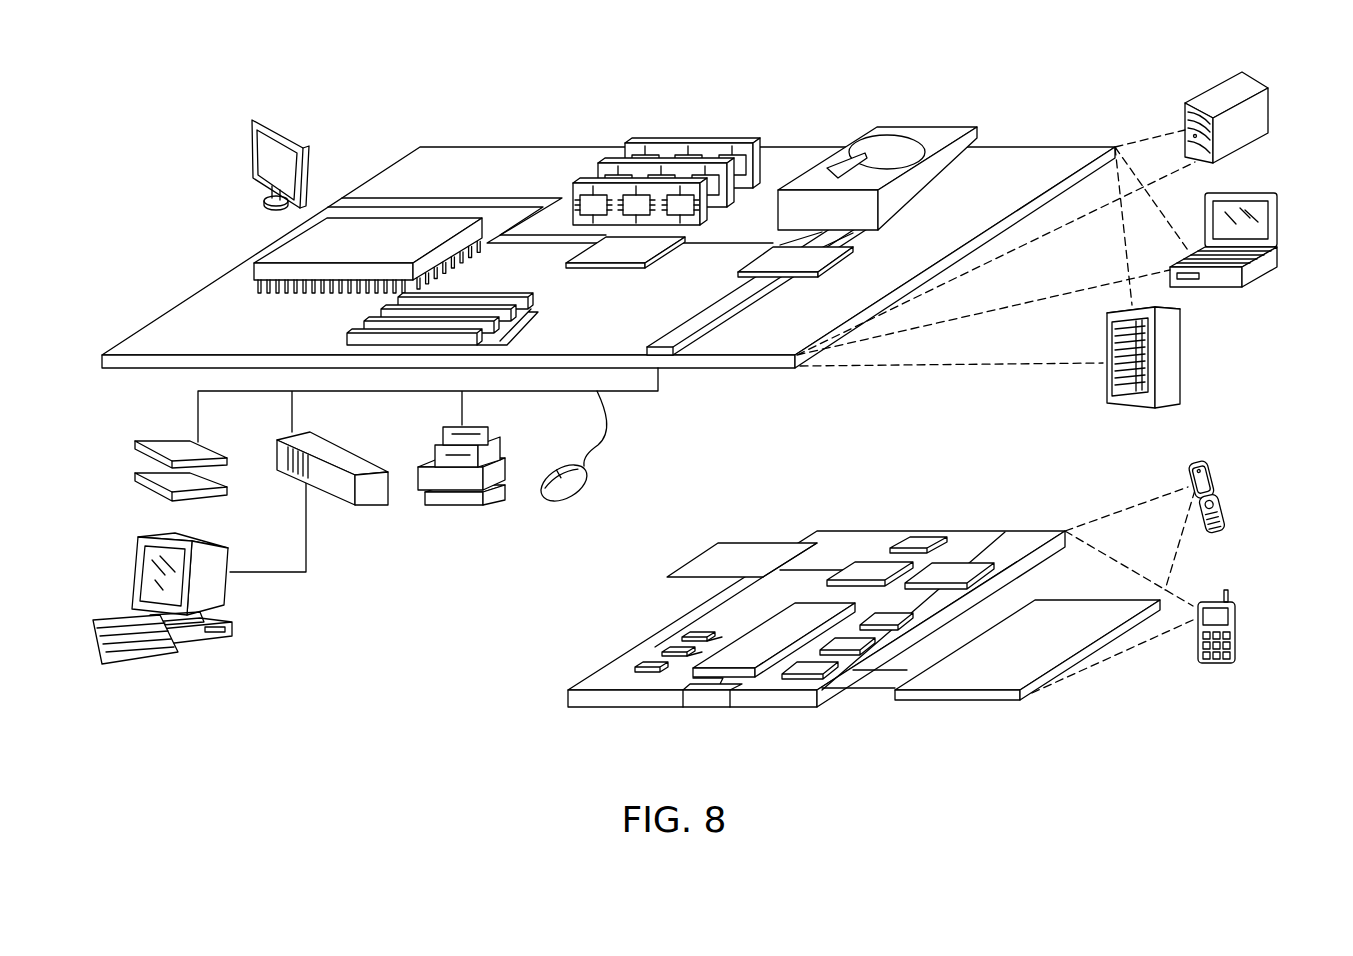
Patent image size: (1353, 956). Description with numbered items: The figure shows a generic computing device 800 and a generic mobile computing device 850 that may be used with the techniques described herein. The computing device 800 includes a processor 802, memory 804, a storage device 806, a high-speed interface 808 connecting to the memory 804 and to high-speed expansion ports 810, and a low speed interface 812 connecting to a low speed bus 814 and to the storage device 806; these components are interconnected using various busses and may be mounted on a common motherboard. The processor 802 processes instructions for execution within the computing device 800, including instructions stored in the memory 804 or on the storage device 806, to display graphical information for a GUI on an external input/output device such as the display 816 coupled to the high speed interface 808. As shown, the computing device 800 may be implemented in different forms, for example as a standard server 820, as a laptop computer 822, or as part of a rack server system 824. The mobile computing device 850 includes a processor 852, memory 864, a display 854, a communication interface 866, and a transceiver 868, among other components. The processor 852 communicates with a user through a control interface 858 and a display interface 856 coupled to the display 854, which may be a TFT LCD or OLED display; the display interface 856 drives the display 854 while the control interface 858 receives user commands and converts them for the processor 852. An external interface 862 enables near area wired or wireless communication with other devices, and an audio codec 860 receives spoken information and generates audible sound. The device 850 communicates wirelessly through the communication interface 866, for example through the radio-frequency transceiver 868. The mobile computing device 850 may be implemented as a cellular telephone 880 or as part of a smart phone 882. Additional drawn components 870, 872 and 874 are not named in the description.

The computing device 800 is at (378, 90).
The processor 802 is at (277, 247).
The memory 804 is at (698, 141).
The storage device 806 is at (917, 125).
The high-speed interface 808 is at (635, 250).
The high-speed expansion ports 810 is at (373, 323).
The low speed interface 812 is at (770, 255).
The low speed bus 814 is at (665, 341).
The display 816 is at (258, 120).
The standard server 820 is at (1205, 98).
The laptop computer 822 is at (1258, 193).
The rack server system 824 is at (1183, 356).
The mobile computing device 850 is at (526, 712).
The processor 852 is at (747, 645).
The display 854 is at (1064, 617).
The display interface 856 is at (820, 668).
The control interface 858 is at (853, 642).
The audio codec 860 is at (892, 615).
The external interface 862 is at (708, 692).
The memory 864 is at (662, 652).
The communication interface 866 is at (870, 562).
The transceiver 868 is at (957, 563).
The antenna chip 870 is at (918, 540).
The interface 872 is at (799, 541).
The touch pad 874 is at (719, 541).
The cellular telephone 880 is at (1200, 462).
The smart phone 882 is at (1215, 600).